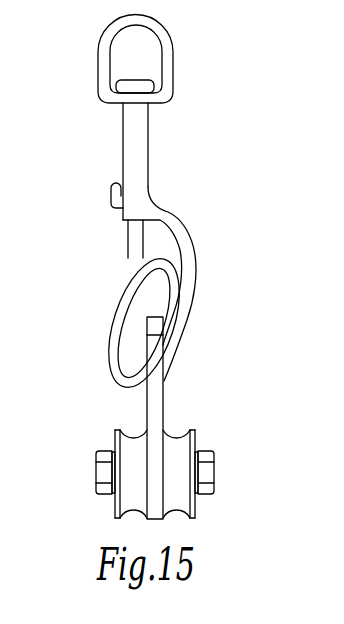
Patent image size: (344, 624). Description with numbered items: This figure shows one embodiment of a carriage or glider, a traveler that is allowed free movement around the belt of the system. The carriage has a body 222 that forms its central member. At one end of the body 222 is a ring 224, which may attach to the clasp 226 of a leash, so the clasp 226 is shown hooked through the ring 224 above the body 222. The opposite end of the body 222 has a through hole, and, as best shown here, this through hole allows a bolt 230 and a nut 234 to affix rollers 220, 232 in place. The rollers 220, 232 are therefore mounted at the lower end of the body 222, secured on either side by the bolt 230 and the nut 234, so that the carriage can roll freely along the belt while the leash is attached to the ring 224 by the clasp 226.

The roller 220 is at (180, 430).
The body 222 is at (161, 380).
The ring 224 is at (189, 310).
The clasp 226 is at (183, 230).
The bolt 230 is at (216, 466).
The roller 232 is at (132, 436).
The nut 234 is at (101, 466).